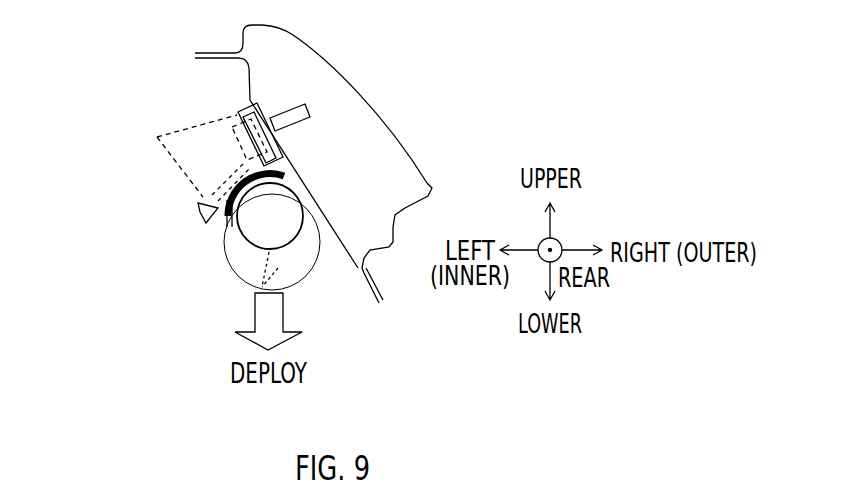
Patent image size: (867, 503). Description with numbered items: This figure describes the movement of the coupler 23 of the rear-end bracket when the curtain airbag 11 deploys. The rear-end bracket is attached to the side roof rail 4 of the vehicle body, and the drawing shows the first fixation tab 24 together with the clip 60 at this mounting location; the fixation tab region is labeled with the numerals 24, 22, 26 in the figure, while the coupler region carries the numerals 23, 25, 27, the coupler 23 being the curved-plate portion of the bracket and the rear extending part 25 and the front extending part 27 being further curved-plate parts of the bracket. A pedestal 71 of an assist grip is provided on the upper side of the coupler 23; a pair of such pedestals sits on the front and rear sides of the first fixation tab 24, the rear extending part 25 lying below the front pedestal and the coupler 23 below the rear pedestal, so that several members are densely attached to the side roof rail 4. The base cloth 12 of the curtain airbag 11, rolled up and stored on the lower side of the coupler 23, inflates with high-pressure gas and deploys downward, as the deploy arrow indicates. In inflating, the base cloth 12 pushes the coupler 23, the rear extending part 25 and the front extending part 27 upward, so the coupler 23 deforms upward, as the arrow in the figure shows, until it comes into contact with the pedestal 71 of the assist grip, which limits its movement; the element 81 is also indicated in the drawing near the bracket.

The side roof rail 4 is at (373, 103).
The clip 60 is at (312, 112).
The first fixation tab 24 is at (172, 105).
The airbag module housing 22 is at (172, 105).
The retainer 26 is at (237, 103).
The pedestal 71 is at (157, 137).
The coupler 23 is at (161, 188).
The rear extending part 25 is at (161, 188).
The front extending part 27 is at (200, 203).
The hinge portion 81 is at (197, 203).
The base cloth 12 is at (213, 259).
The curtain airbag 11 is at (218, 210).